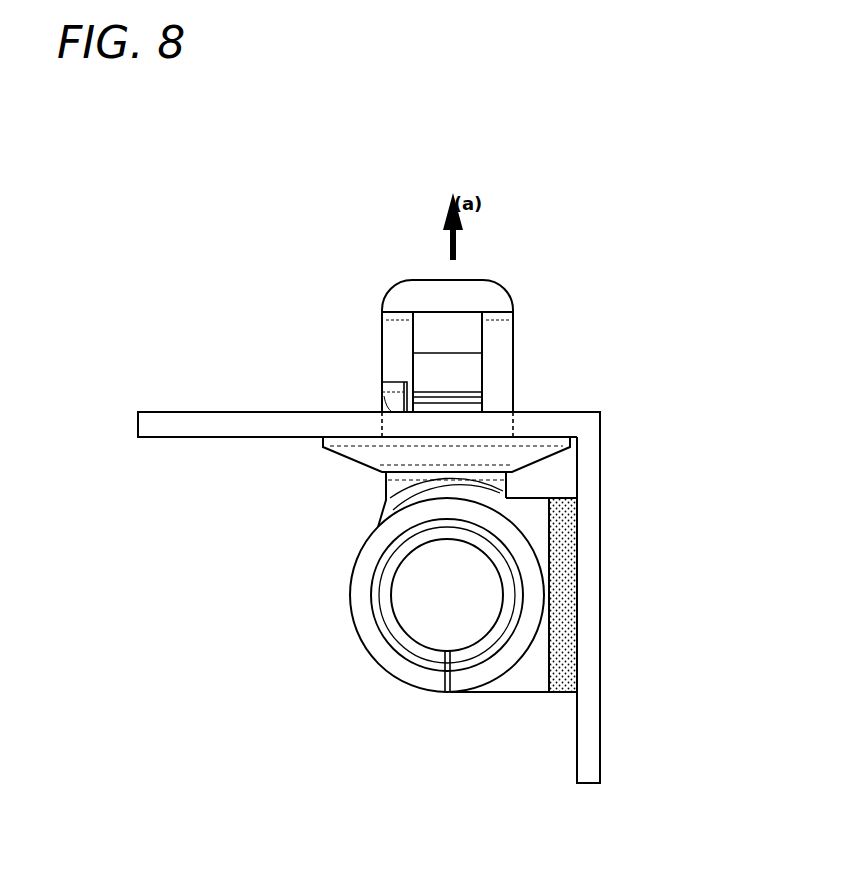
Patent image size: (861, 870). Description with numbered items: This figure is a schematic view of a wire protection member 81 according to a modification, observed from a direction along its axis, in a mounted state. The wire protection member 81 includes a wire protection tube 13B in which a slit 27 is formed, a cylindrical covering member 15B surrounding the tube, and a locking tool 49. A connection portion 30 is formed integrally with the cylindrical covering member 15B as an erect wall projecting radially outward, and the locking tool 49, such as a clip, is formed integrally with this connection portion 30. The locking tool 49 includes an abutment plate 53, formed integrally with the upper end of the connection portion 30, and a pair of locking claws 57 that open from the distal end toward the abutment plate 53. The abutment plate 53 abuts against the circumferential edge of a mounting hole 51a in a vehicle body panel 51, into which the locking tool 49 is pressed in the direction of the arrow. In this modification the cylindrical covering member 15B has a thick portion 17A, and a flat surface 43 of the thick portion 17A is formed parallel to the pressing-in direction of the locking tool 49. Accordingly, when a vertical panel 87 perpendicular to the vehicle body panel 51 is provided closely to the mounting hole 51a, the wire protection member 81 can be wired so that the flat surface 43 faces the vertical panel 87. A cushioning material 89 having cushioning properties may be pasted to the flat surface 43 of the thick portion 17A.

The wire protection member 81 is at (328, 257).
The locking tool 49 is at (495, 270).
The locking claws 57 is at (438, 370).
The vehicle body panel 51 is at (181, 410).
The mounting hole 51a is at (512, 421).
The vertical panel 87 is at (602, 760).
The abutment plate 53 is at (337, 455).
The connection portion 30 is at (394, 490).
The cylindrical covering member 15B is at (375, 675).
The wire protection tube 13B is at (373, 634).
The slit 27 is at (447, 693).
The thick portion 17A is at (523, 683).
The cushioning material 89 is at (567, 549).
The flat surface 43 is at (550, 637).